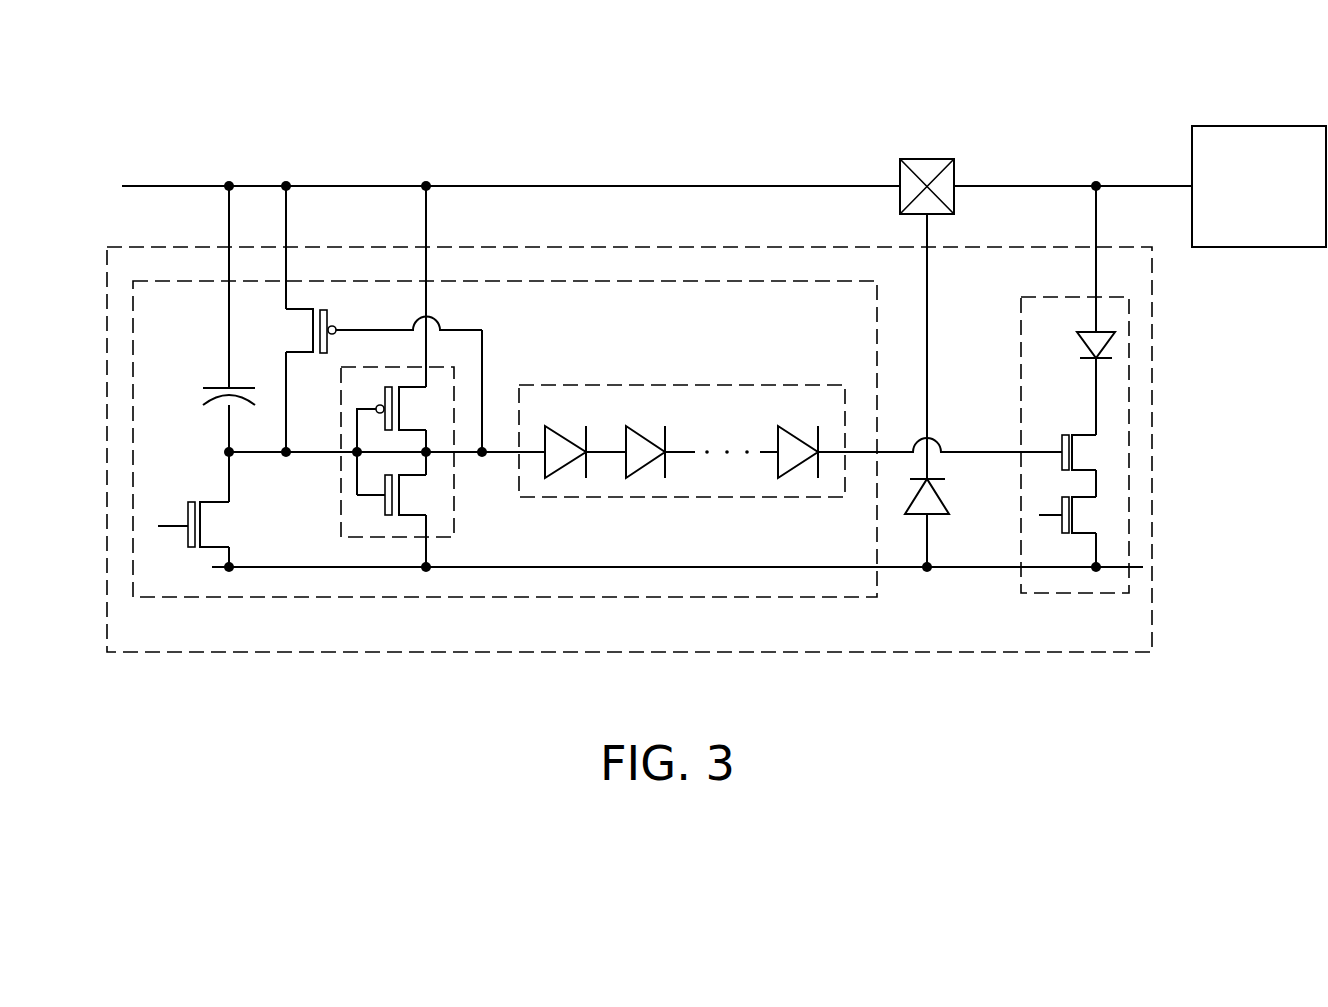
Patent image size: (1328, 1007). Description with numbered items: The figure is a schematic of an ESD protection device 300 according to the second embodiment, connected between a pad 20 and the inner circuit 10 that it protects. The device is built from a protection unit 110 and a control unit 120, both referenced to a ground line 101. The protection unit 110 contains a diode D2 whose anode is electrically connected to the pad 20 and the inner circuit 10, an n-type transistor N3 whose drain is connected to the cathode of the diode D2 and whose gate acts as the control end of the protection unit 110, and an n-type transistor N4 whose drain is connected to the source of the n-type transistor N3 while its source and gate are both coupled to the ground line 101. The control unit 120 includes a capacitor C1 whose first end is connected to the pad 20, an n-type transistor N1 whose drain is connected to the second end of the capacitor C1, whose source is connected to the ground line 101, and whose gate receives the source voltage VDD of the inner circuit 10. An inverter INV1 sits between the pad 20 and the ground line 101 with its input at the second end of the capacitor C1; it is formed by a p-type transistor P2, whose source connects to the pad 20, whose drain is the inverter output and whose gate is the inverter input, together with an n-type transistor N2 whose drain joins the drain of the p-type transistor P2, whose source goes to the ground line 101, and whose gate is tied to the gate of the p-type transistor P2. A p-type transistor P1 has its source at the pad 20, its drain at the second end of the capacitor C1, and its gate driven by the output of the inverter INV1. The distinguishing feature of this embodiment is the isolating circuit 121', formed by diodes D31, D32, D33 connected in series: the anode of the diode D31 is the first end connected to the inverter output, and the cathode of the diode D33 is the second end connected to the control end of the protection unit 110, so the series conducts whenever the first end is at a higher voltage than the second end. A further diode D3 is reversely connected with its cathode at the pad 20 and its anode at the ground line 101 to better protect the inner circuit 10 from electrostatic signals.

The inner circuit 10 is at (1257, 248).
The pad 20 is at (927, 159).
The ESD protection device 300 is at (1152, 500).
The control unit 120 is at (805, 597).
The isolating circuit 121' is at (682, 466).
The ground line 101 is at (905, 568).
The protection unit 110 is at (1047, 593).
The inverter INV1 is at (454, 537).
The capacitor C1 is at (211, 393).
The p-type transistor P1 is at (372, 331).
The p-type transistor P2 is at (400, 441).
The n-type transistor N1 is at (202, 524).
The n-type transistor N2 is at (400, 495).
The n-type transistor N3 is at (1091, 452).
The n-type transistor N4 is at (1079, 514).
The diode D2 is at (1079, 350).
The diode D3 is at (945, 499).
The diode D31 is at (565, 434).
The diode D32 is at (647, 434).
The diode D33 is at (799, 434).
The source voltage VDD is at (162, 508).